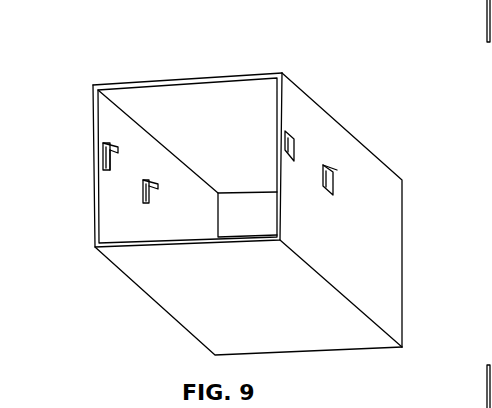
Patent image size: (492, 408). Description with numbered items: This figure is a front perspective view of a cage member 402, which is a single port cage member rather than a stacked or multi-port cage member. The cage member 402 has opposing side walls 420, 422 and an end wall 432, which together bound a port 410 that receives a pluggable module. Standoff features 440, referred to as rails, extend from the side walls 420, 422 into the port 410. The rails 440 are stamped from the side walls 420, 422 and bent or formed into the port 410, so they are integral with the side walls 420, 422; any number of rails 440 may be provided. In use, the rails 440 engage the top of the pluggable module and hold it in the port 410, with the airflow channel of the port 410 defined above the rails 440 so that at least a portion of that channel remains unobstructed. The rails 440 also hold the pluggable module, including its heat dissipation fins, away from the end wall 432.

The cage member 402 is at (347, 91).
The port 410 is at (116, 200).
The side wall 420 is at (96, 133).
The side wall 422 is at (375, 237).
The end wall 432 is at (197, 80).
The standoff features 440 is at (112, 152).